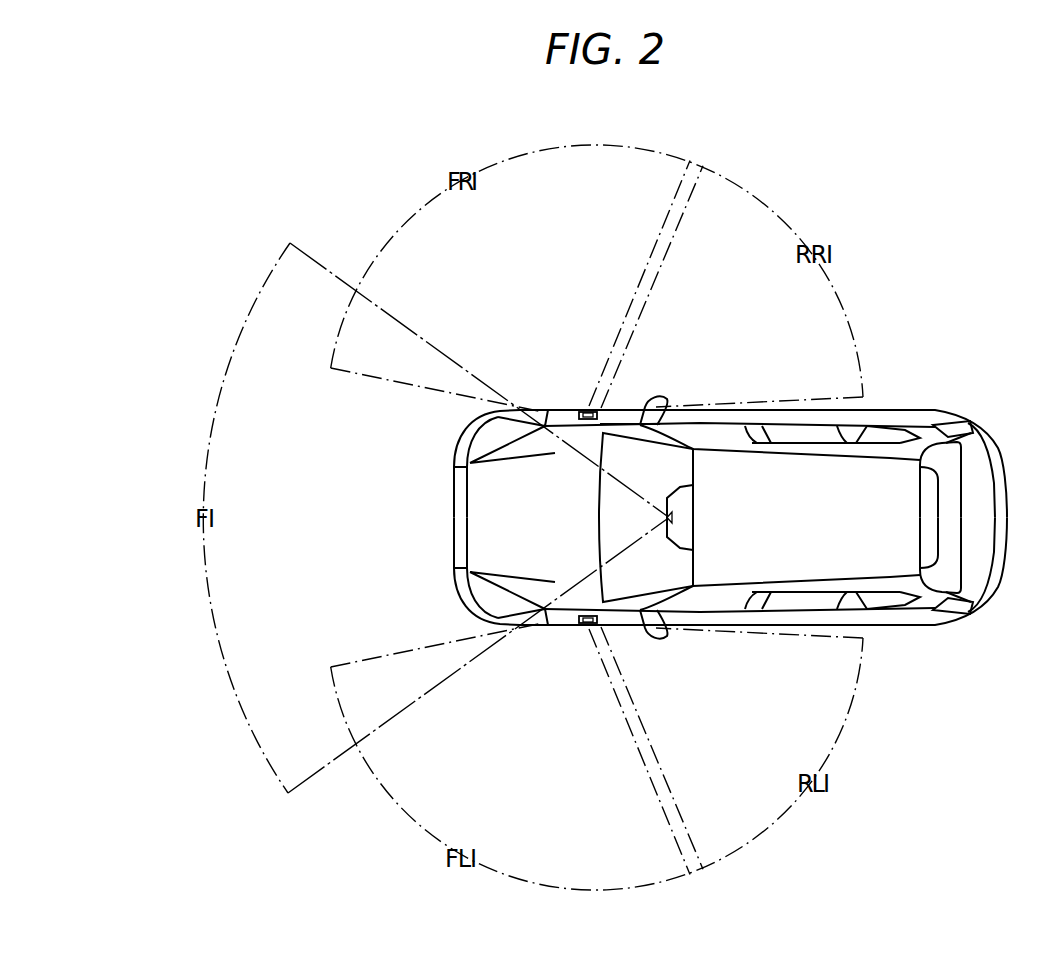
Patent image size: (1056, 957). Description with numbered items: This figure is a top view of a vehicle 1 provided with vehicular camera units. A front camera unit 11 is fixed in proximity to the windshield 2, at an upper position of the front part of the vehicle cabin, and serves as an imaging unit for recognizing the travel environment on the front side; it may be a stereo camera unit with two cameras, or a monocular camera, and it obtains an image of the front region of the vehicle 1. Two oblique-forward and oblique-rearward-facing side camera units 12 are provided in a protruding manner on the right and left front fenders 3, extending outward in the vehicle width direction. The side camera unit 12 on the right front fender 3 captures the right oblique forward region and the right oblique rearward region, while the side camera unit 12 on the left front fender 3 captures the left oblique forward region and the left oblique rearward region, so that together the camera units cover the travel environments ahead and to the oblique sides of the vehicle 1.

The vehicle 1 is at (884, 395).
The windshield 2 is at (632, 425).
The front fender 3 is at (552, 408).
The front camera unit 11 is at (693, 517).
The side camera unit 12 is at (588, 411).